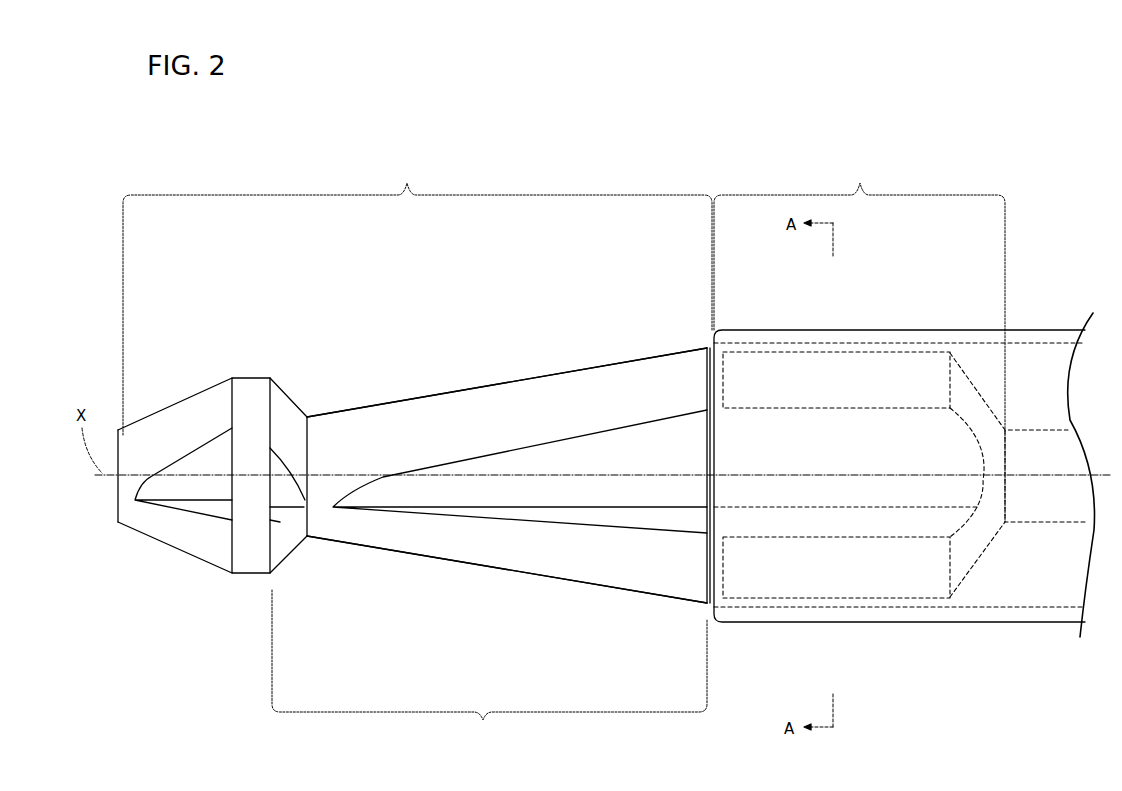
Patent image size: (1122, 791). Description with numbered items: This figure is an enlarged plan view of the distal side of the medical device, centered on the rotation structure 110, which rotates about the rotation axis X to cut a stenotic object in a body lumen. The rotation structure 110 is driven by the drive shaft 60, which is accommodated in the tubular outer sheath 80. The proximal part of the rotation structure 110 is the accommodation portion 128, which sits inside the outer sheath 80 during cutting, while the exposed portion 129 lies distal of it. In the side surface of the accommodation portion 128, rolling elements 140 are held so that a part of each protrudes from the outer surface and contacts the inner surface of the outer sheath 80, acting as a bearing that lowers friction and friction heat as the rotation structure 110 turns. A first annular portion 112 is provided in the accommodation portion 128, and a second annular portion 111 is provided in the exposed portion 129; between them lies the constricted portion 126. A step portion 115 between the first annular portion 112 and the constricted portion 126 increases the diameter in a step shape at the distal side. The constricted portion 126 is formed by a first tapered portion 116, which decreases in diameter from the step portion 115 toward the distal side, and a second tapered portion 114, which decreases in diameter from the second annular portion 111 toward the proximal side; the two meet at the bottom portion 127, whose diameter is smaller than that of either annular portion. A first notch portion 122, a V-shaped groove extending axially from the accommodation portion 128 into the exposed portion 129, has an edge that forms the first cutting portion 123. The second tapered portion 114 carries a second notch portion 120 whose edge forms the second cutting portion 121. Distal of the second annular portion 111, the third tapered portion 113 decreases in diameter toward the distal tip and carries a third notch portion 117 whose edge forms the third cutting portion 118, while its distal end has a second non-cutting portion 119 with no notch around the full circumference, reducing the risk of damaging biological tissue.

The drive shaft 60 is at (1048, 523).
The outer sheath 80 is at (1050, 330).
The rotation structure 110 is at (498, 369).
The second annular portion 111 is at (248, 397).
The first annular portion 112 is at (770, 377).
The third tapered portion 113 is at (167, 425).
The second tapered portion 114 is at (281, 407).
The step portion 115 is at (707, 346).
The first tapered portion 116 is at (553, 393).
The third notch portion 117 is at (152, 490).
The third cutting portion 118 is at (186, 517).
The second non-cutting portion 119 is at (128, 499).
The second notch portion 120 is at (287, 490).
The second cutting portion 121 is at (279, 521).
The first notch portion 122 is at (627, 493).
The first cutting portion 123 is at (513, 520).
The constricted portion 126 is at (489, 667).
The bottom portion 127 is at (304, 413).
The accommodation portion 128 is at (859, 338).
The exposed portion 129 is at (417, 295).
The rolling element 140 is at (855, 350).